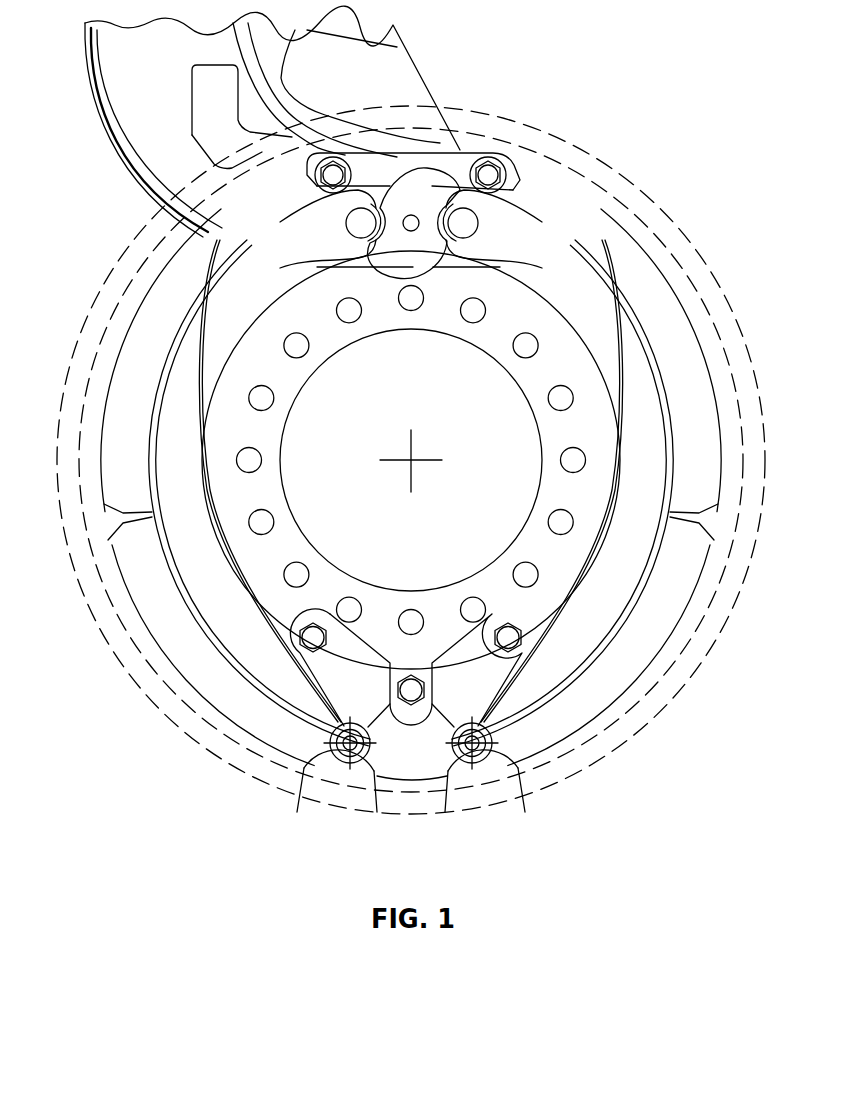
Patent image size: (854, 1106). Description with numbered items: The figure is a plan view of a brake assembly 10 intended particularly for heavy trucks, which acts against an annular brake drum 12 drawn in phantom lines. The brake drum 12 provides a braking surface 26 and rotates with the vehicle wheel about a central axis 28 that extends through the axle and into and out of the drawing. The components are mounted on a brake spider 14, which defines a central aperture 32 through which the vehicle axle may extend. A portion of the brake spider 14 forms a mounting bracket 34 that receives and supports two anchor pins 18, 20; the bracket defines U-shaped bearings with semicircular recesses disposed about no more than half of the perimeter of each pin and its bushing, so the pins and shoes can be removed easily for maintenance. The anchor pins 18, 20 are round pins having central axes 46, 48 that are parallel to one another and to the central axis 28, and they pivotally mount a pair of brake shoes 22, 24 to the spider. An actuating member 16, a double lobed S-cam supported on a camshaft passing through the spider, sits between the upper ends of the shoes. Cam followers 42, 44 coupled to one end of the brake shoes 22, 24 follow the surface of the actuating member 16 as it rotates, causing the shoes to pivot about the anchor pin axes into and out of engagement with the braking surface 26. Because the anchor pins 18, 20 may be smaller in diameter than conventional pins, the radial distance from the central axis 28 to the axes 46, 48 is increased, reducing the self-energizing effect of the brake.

The brake assembly 10 is at (115, 209).
The brake drum 12 is at (681, 233).
The brake spider 14 is at (282, 367).
The actuating member 16 is at (420, 193).
The anchor pin 18 is at (336, 757).
The anchor pin 20 is at (486, 757).
The brake shoe 22 is at (150, 365).
The brake shoe 24 is at (676, 343).
The braking surface 26 is at (622, 198).
The central axis 28 is at (413, 458).
The central aperture 32 is at (300, 401).
The mounting bracket 34 is at (487, 686).
The cam follower 42 is at (361, 223).
The cam follower 44 is at (463, 223).
The central axis 46 is at (364, 772).
The central axis 48 is at (458, 772).